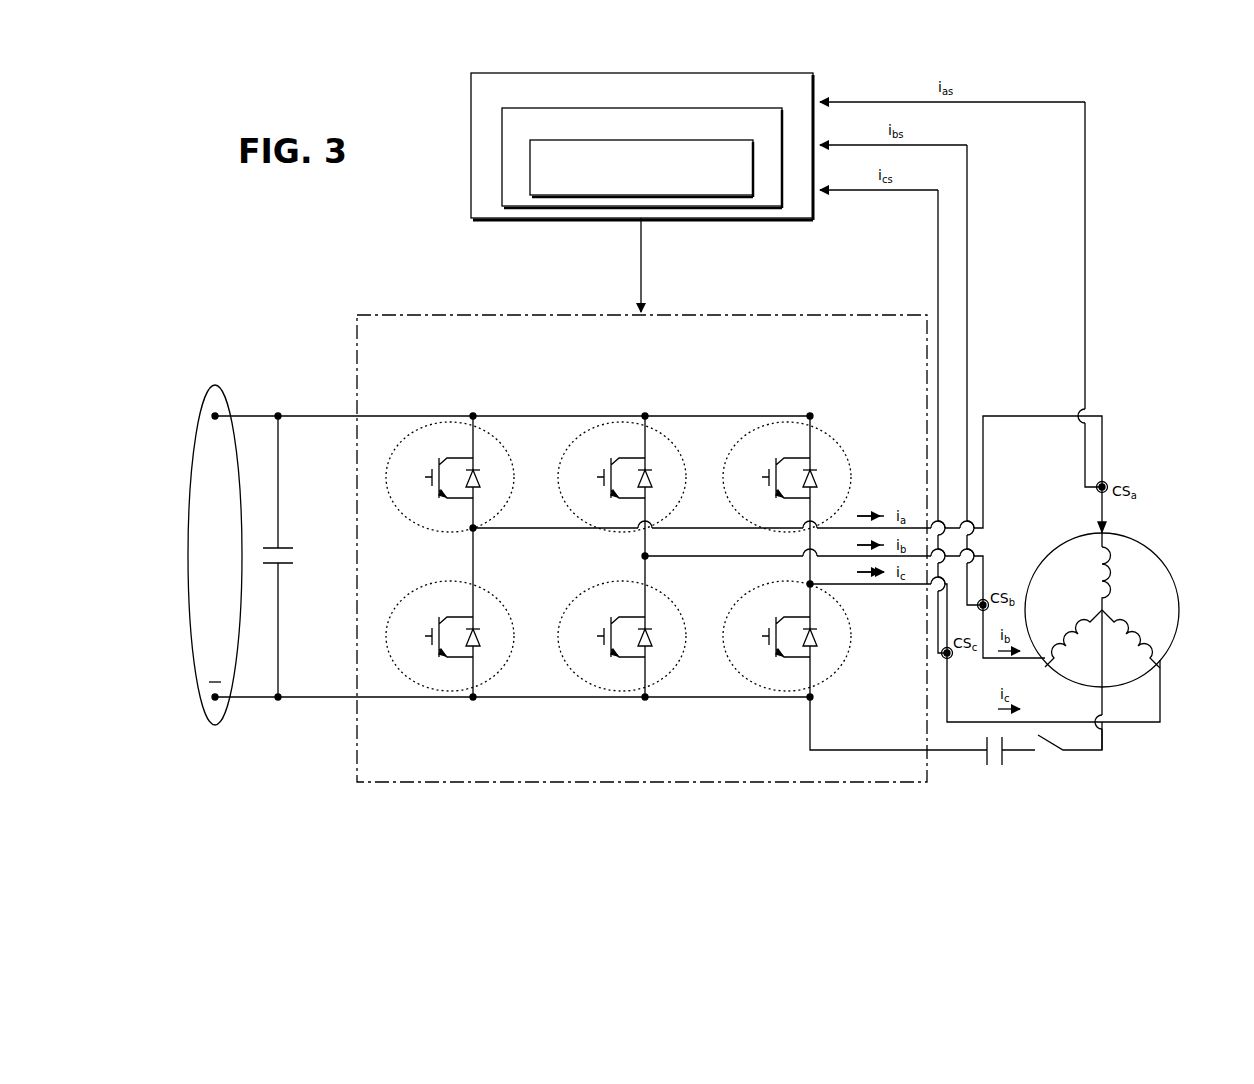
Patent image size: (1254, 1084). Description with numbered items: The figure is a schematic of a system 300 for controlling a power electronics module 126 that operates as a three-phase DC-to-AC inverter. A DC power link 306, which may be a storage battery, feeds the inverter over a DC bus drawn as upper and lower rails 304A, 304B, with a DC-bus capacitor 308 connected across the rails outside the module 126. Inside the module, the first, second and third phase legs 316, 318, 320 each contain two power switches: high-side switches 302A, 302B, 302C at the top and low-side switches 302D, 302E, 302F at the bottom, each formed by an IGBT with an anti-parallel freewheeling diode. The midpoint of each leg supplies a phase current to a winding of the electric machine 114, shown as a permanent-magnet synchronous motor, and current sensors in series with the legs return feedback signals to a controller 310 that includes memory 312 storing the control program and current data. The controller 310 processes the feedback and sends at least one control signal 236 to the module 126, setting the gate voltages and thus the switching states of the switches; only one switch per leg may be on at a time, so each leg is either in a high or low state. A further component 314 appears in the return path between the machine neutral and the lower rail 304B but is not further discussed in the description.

The system 300 is at (893, 66).
The controller 310 is at (637, 73).
The memory 312 is at (771, 108).
The control signal 236 is at (638, 262).
The power electronics module 126 is at (512, 315).
The DC power link 306 is at (215, 386).
The positive DC bus 304A is at (328, 412).
The negative DC bus 304B is at (328, 702).
The DC-bus capacitor 308 is at (290, 567).
The high-side switch 302A is at (447, 418).
The high-side switch 302B is at (617, 418).
The high-side switch 302C is at (785, 418).
The low-side switch 302D is at (447, 690).
The low-side switch 302E is at (620, 692).
The low-side switch 302F is at (782, 692).
The first phase leg A 316 is at (472, 530).
The second phase leg B 318 is at (645, 556).
The third phase leg C 320 is at (810, 584).
The capacitor 314 is at (986, 761).
The electric machine 114 is at (1156, 554).